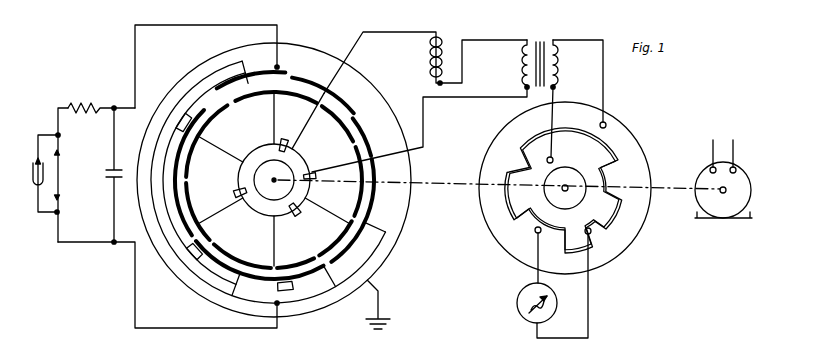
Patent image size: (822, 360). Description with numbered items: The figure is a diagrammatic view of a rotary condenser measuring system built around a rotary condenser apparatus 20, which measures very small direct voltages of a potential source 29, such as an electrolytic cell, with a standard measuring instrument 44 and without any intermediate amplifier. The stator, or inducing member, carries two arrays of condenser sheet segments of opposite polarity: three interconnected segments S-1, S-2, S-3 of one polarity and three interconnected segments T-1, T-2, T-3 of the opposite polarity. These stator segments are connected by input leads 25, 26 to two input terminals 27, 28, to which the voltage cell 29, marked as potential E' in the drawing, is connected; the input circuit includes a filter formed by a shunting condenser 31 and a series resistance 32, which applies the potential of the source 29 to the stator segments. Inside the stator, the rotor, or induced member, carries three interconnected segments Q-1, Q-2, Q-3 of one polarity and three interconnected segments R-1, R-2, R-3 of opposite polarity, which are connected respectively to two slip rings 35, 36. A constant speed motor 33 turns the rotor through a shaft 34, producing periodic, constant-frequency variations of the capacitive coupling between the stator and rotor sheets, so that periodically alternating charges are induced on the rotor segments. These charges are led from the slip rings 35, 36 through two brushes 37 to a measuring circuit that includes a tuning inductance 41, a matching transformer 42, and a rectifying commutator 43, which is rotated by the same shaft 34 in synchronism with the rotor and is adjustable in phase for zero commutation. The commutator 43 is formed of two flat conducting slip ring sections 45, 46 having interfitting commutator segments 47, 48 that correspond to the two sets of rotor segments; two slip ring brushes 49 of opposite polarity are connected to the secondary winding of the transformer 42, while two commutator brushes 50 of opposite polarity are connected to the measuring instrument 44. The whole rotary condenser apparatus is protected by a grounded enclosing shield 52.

The rotary condenser apparatus 20 is at (291, 37).
The input lead 25 is at (233, 26).
The input lead 26 is at (236, 329).
The input terminal 27 is at (57, 134).
The input terminal 28 is at (56, 214).
The potential source 29 is at (33, 180).
The condenser 31 is at (110, 182).
The resistance 32 is at (88, 106).
The constant speed motor 33 is at (747, 186).
The shaft 34 is at (670, 188).
The slip ring 35 is at (299, 194).
The slip ring 36 is at (238, 181).
The brushes 37 is at (283, 147).
The tuning inductance 41 is at (430, 60).
The matching transformer 42 is at (542, 40).
The rectifying commutator 43 is at (628, 138).
The measuring instrument 44 is at (518, 303).
The flat conducting slip ring section 45 is at (487, 160).
The flat conducting slip ring section 46 is at (507, 204).
The commutator segment 47 is at (523, 222).
The commutator segment 48 is at (615, 215).
The slip ring brushes 49 is at (547, 158).
The commutator brushes 50 is at (536, 234).
The grounded enclosing shield 52 is at (388, 257).
The condenser sheet segment T-1 is at (216, 88).
The condenser sheet segment T-2 is at (380, 157).
The condenser sheet segment T-3 is at (208, 258).
The condenser sheet segment S-1 is at (177, 133).
The condenser sheet segment S-2 is at (309, 88).
The condenser sheet segment S-3 is at (315, 278).
The condenser sheet segment R-1 is at (245, 95).
The condenser sheet segment R-2 is at (360, 197).
The condenser sheet segment R-3 is at (216, 246).
The condenser sheet segment Q-1 is at (208, 108).
The condenser sheet segment Q-2 is at (334, 108).
The condenser sheet segment Q-3 is at (303, 262).
The voltage source E' is at (67, 179).